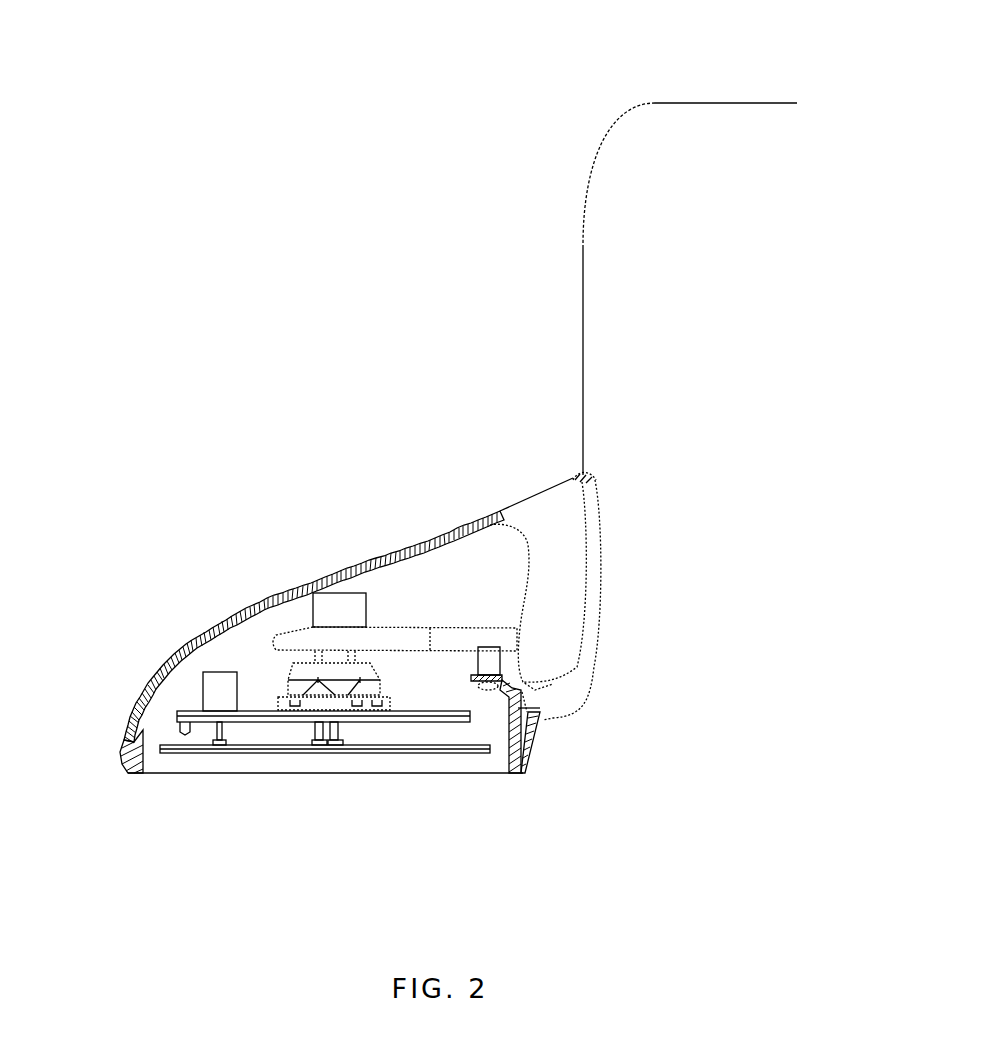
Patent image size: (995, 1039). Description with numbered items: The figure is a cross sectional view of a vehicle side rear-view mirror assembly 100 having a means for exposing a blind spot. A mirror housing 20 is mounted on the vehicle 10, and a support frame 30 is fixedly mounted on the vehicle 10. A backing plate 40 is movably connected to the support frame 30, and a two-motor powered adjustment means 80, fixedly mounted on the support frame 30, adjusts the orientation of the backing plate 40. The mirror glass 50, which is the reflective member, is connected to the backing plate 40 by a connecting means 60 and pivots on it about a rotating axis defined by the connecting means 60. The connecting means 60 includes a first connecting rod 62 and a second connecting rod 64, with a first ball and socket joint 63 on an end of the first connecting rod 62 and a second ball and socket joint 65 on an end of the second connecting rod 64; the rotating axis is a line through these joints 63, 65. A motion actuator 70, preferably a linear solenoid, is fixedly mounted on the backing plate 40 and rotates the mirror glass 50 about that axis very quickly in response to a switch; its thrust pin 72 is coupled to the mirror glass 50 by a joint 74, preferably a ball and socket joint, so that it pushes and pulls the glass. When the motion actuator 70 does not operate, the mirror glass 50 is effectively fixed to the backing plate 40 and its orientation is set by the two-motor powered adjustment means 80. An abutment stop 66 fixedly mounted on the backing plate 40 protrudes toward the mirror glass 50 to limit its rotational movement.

The vehicle side rear-view mirror assembly 100 is at (146, 165).
The vehicle 10 is at (746, 118).
The mirror housing 20 is at (397, 547).
The support frame 30 is at (412, 628).
The backing plate 40 is at (413, 711).
The mirror glass 50 is at (395, 750).
The connecting means 60 is at (377, 832).
The first connecting rod 62 is at (312, 728).
The first ball and socket joint 63 is at (317, 748).
The second connecting rod 64 is at (338, 723).
The second ball and socket joint 65 is at (337, 748).
The abutment stop 66 is at (172, 750).
The motion actuator 70 is at (210, 676).
The thrust pin 72 is at (215, 730).
The joint 74 is at (220, 745).
The two-motor powered adjustment means 80 is at (290, 680).